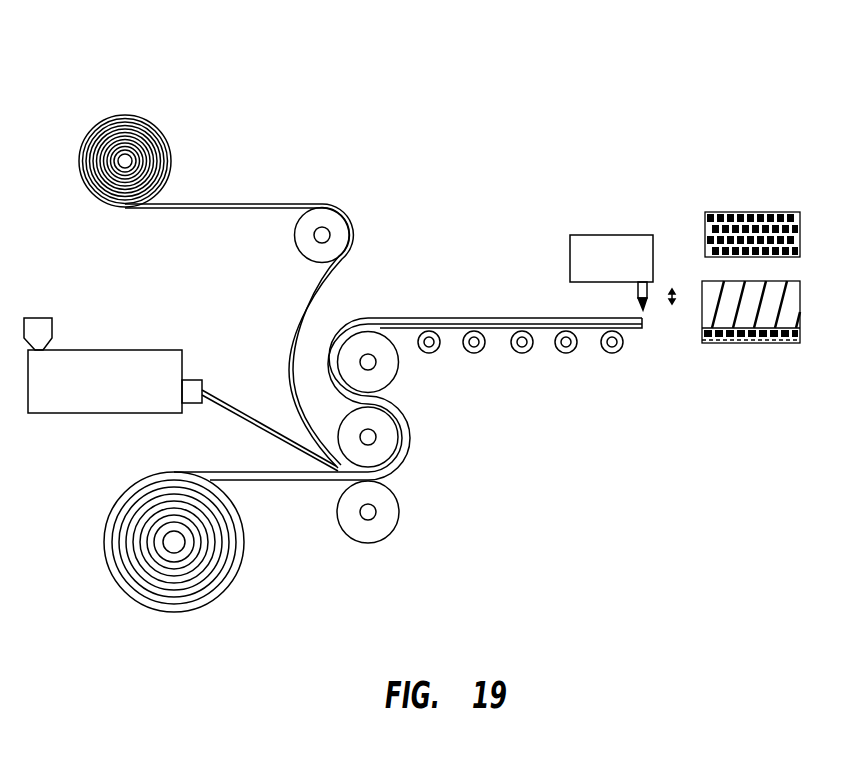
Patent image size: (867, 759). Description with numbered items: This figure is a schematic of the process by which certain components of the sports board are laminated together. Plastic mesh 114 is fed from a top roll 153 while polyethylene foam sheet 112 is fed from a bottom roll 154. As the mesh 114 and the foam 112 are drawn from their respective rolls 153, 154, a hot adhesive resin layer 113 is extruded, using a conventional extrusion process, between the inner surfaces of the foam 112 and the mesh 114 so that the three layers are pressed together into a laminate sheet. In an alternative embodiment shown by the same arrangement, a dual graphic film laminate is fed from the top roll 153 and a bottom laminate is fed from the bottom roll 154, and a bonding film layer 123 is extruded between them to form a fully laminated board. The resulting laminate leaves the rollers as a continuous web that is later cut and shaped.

The top roll 153 is at (127, 115).
The plastic mesh 114 is at (243, 203).
The hot adhesive resin layer 113 is at (231, 404).
The bonding film layer 123 is at (232, 404).
The polyethylene foam sheet 112 is at (308, 548).
The bottom roll 154 is at (183, 612).